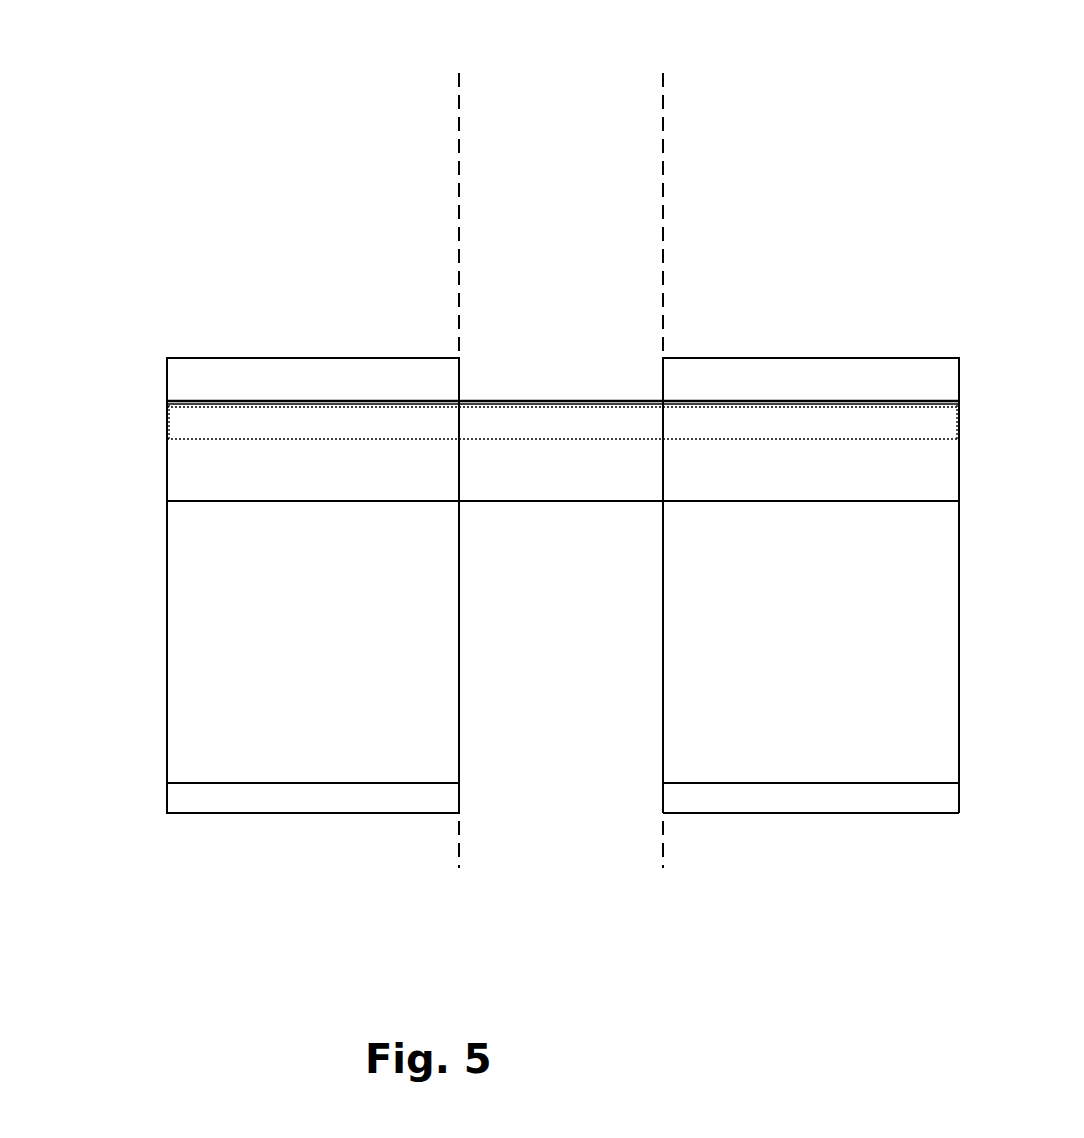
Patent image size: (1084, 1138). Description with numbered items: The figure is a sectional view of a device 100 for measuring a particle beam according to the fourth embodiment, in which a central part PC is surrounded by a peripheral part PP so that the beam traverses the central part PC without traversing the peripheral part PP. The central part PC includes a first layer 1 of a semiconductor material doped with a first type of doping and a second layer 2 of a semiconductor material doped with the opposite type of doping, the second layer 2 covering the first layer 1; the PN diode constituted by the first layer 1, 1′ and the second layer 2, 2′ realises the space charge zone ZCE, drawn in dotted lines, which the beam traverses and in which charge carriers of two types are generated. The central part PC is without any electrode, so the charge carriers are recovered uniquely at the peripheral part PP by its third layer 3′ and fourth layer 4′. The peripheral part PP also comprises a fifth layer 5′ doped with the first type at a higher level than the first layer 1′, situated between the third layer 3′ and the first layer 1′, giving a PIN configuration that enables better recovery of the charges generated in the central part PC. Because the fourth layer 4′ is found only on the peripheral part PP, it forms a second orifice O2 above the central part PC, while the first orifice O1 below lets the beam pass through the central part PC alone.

The device for measuring a particle beam 100 is at (138, 69).
The first layer of the peripheral part 1′ is at (203, 473).
The second layer of the peripheral part 2′ is at (213, 403).
The third layer of the peripheral part 3′ is at (230, 793).
The fourth layer of the peripheral part 4′ is at (347, 385).
The fifth layer of the peripheral part 5′ is at (203, 588).
The first layer of the central part 1 is at (547, 453).
The second layer of the central part 2 is at (601, 405).
The space charge zone ZCE is at (608, 425).
The first orifice O1 is at (505, 836).
The second orifice O2 is at (604, 250).
The peripheral part PP is at (549, 74).
The central part PC is at (564, 75).